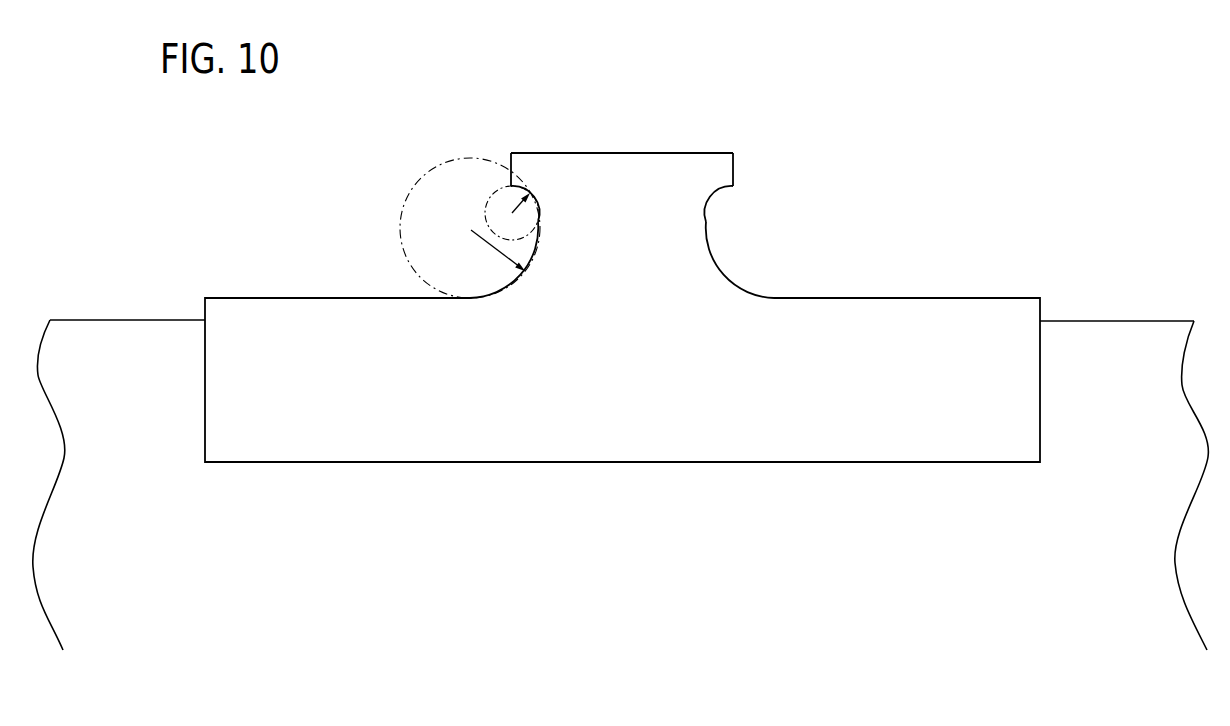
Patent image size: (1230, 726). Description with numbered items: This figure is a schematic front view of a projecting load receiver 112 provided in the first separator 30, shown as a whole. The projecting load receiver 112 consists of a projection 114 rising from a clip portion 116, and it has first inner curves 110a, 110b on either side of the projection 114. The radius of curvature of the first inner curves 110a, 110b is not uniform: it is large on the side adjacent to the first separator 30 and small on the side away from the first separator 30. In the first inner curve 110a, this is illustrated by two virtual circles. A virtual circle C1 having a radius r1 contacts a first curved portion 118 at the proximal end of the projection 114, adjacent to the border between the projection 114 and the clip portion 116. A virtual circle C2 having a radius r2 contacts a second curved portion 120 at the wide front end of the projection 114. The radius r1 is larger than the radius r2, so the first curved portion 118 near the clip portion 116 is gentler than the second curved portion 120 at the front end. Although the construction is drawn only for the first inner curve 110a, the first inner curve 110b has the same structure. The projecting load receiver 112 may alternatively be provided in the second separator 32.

The first separator 30 is at (152, 314).
The second separator 32 is at (1124, 485).
The projecting load receiver 112 is at (756, 143).
The projection 114 is at (668, 168).
The clip portion 116 is at (327, 450).
The first curved portion 118 is at (504, 289).
The second curved portion 120 is at (512, 197).
The first inner curve 110a is at (338, 192).
The first inner curve 110b is at (822, 192).
The virtual circle C1 is at (459, 158).
The virtual circle C2 is at (536, 240).
The radius r1 is at (490, 250).
The radius r2 is at (513, 208).